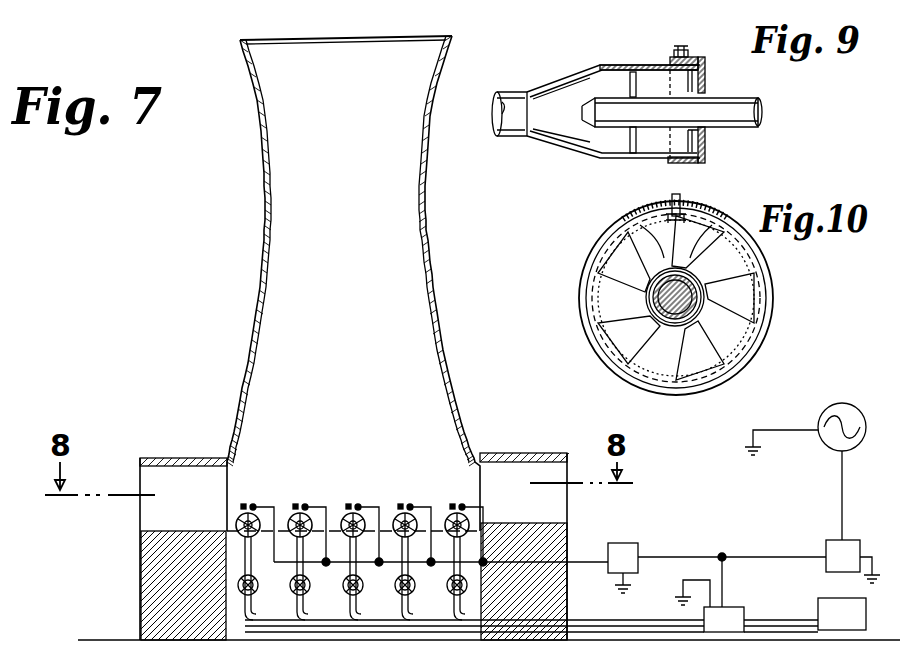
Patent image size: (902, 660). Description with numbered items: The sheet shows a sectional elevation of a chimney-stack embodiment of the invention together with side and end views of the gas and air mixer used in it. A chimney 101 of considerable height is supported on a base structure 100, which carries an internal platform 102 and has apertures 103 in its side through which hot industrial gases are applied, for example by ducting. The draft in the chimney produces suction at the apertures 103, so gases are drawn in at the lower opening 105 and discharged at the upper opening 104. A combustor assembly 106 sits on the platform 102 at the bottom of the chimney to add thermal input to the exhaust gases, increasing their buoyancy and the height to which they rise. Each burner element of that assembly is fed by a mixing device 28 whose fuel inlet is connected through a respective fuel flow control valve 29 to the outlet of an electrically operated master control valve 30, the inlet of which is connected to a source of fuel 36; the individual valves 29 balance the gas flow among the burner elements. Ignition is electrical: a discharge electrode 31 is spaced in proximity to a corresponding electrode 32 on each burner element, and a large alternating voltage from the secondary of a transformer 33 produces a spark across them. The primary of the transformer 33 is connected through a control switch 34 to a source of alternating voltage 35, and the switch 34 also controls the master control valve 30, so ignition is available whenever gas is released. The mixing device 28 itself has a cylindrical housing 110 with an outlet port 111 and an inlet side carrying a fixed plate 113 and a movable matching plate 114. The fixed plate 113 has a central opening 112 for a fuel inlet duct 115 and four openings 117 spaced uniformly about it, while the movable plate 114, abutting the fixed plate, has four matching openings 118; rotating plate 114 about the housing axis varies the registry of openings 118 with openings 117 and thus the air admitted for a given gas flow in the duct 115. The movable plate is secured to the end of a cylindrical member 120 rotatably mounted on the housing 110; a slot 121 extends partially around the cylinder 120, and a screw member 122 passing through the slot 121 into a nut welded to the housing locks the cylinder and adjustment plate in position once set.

In FIG. 7, the mixing device 28 is at (407, 512).
In FIG. 9, the mixing device 28 is at (650, 96).
In FIG. 10, the mixing device 28 is at (702, 302).
In FIG. 7, the fuel flow control valve 29 is at (352, 603).
In FIG. 7, the master control valve 30 is at (728, 608).
In FIG. 7, the discharge electrode 31 is at (318, 480).
In FIG. 7, the electrode 32 is at (300, 505).
In FIG. 7, the transformer 33 is at (638, 548).
In FIG. 7, the control switch 34 is at (830, 540).
In FIG. 7, the source of alternating voltage 35 is at (826, 446).
In FIG. 7, the source of fuel 36 is at (830, 600).
In FIG. 7, the base structure 100 is at (142, 598).
In FIG. 7, the chimney 101 is at (265, 203).
In FIG. 7, the internal platform 102 is at (227, 528).
In FIG. 7, the apertures 103 is at (140, 522).
In FIG. 7, the upper opening 104 is at (248, 40).
In FIG. 7, the lower opening 105 is at (228, 470).
In FIG. 7, the combustor assembly 106 is at (342, 480).
In FIG. 9, the housing 110 is at (616, 66).
In FIG. 9, the outlet port 111 is at (512, 95).
In FIG. 9, the central opening 112 is at (658, 66).
In FIG. 9, the fixed plate 113 is at (695, 135).
In FIG. 10, the fixed plate 113 is at (636, 222).
In FIG. 9, the movable matching plate 114 is at (705, 78).
In FIG. 10, the movable matching plate 114 is at (722, 376).
In FIG. 9, the fuel inlet duct 115 is at (761, 108).
In FIG. 10, the fuel inlet duct 115 is at (700, 290).
In FIG. 9, the openings 117 is at (668, 156).
In FIG. 10, the openings 117 is at (740, 318).
In FIG. 10, the matching openings 118 is at (720, 345).
In FIG. 9, the cylindrical member 120 is at (705, 157).
In FIG. 10, the cylindrical member 120 is at (765, 305).
In FIG. 9, the slot 121 is at (680, 50).
In FIG. 10, the slot 121 is at (670, 200).
In FIG. 9, the screw member 122 is at (688, 52).
In FIG. 10, the screw member 122 is at (682, 200).